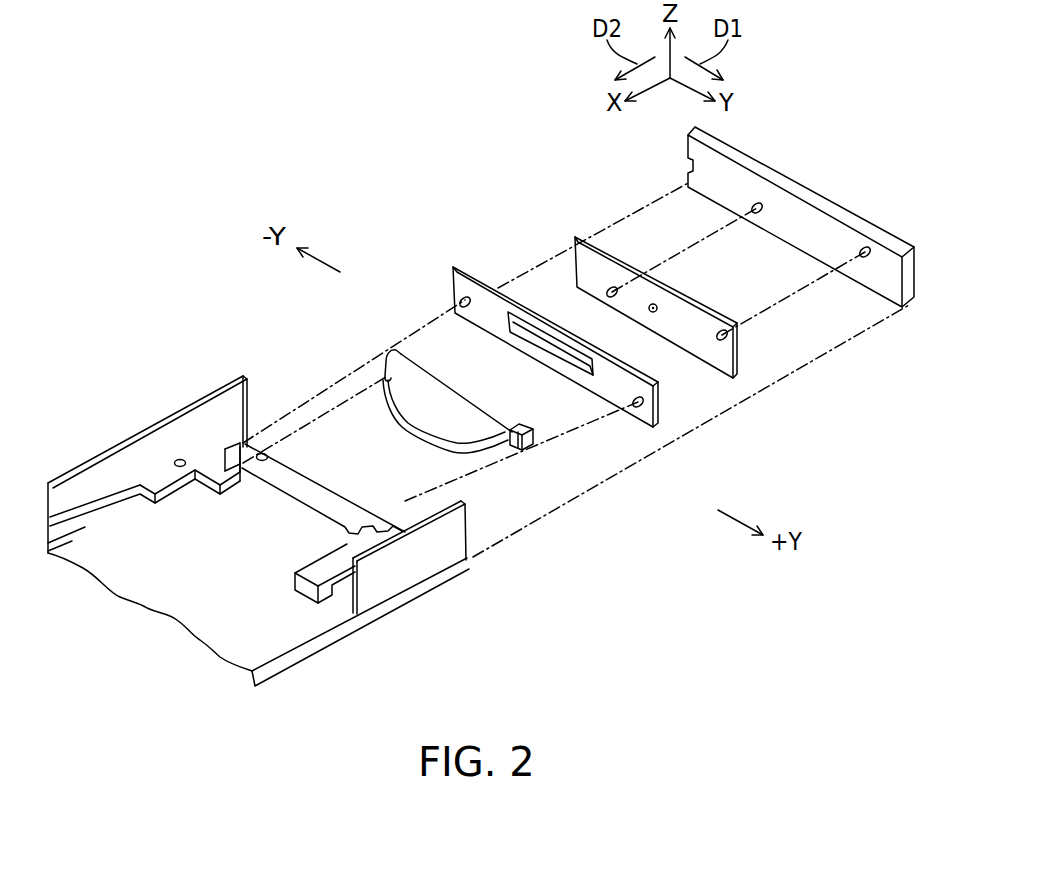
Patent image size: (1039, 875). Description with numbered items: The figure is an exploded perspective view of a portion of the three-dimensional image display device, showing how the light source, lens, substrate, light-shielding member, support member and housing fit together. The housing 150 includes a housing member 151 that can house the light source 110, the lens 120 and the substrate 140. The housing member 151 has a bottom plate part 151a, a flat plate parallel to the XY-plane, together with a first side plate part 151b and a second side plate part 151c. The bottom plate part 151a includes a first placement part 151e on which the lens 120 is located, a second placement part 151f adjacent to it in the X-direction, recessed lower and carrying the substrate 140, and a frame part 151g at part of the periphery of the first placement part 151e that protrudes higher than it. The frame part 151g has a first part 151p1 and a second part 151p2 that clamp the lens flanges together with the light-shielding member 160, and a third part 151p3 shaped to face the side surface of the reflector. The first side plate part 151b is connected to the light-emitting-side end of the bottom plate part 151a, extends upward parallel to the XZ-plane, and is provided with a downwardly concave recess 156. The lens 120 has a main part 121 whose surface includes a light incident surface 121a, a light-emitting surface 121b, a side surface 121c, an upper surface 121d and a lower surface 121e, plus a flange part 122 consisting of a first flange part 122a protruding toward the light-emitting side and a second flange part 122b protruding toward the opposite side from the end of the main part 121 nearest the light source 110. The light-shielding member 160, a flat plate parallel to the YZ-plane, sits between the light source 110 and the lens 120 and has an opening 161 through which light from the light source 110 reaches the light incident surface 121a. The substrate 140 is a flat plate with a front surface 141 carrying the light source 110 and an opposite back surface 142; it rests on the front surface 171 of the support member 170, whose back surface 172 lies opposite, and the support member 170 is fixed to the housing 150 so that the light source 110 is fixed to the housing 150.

The light source 110 is at (657, 304).
The lens 120 is at (634, 508).
The main part 121 is at (430, 445).
The light incident surface 121a is at (433, 369).
The light-emitting surface 121b is at (395, 436).
The side surface 121c is at (384, 378).
The upper surface 121d is at (450, 399).
The lower surface 121e is at (443, 450).
The flange part 122 is at (519, 408).
The first flange part 122a is at (525, 426).
The second flange part 122b is at (392, 350).
The substrate 140 is at (752, 375).
The front surface 141 is at (703, 327).
The back surface 142 is at (742, 357).
The housing 150 is at (440, 607).
The housing member 151 is at (403, 598).
The bottom plate part 151a is at (187, 694).
The first side plate part 151b is at (440, 568).
The second side plate part 151c is at (70, 478).
The first placement part 151e is at (167, 583).
The second placement part 151f is at (297, 487).
The frame part 151g is at (85, 520).
The first part 151p1 is at (350, 533).
The second part 151p2 is at (217, 469).
The third part 151p3 is at (120, 494).
The recess 156 is at (362, 604).
The light-shielding member 160 is at (680, 430).
The opening 161 is at (572, 348).
The support member 170 is at (916, 313).
The front surface 171 is at (808, 217).
The back surface 172 is at (853, 213).